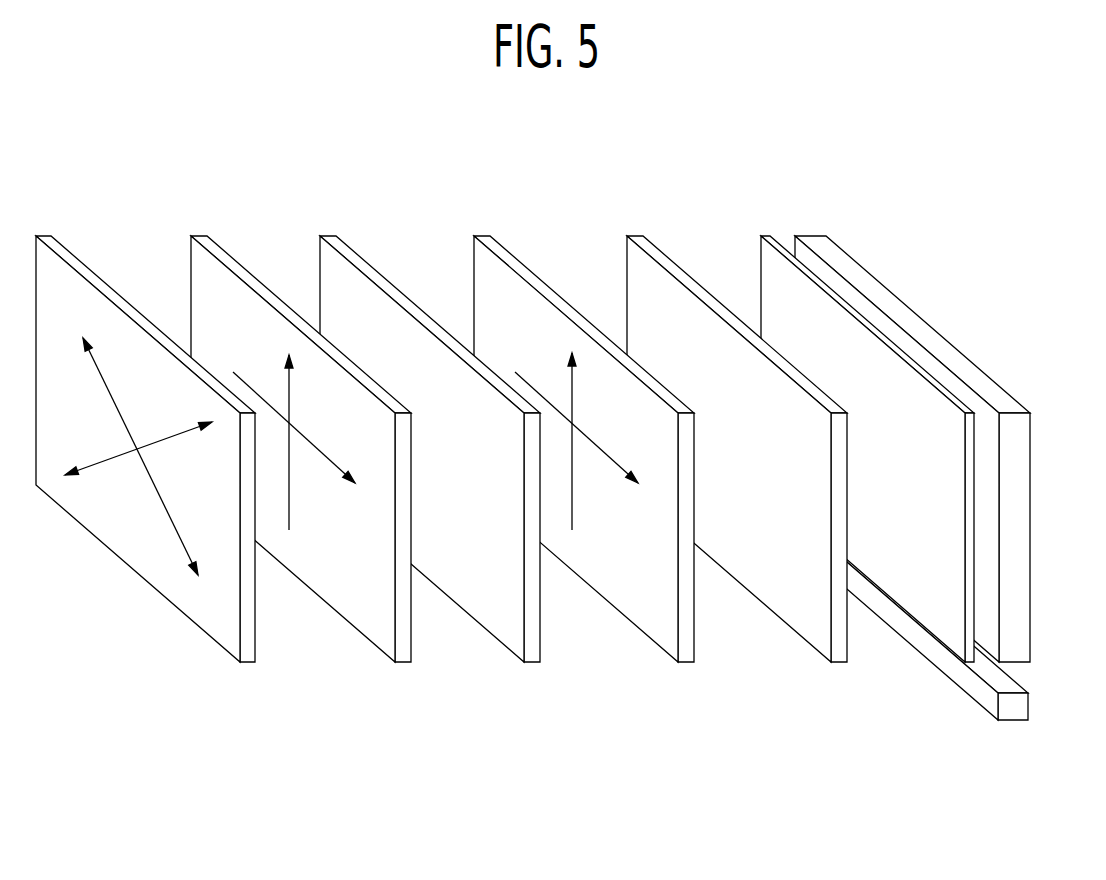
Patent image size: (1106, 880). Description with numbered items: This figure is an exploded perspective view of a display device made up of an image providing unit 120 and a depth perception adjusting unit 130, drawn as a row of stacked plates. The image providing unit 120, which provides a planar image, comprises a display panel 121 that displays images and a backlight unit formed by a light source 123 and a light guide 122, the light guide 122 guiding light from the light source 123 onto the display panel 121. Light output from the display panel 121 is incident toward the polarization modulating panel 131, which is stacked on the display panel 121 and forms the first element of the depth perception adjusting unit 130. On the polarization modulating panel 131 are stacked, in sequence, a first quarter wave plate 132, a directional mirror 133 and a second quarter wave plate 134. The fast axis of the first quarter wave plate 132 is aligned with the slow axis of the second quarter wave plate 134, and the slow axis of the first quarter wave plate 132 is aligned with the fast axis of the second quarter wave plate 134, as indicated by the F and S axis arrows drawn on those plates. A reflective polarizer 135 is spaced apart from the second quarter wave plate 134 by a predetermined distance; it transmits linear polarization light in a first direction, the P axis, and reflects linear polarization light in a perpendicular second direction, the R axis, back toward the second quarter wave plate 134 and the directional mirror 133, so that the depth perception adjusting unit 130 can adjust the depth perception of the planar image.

The image providing unit 120 is at (929, 531).
The display panel 121 is at (867, 511).
The light guide 122 is at (1017, 615).
The light source 123 is at (985, 698).
The depth perception adjusting unit 130 is at (441, 507).
The polarization modulating panel 131 is at (801, 620).
The first quarter wave plate 132 is at (648, 620).
The directional mirror 133 is at (495, 620).
The second quarter wave plate 134 is at (365, 620).
The reflective polarizer 135 is at (145, 484).